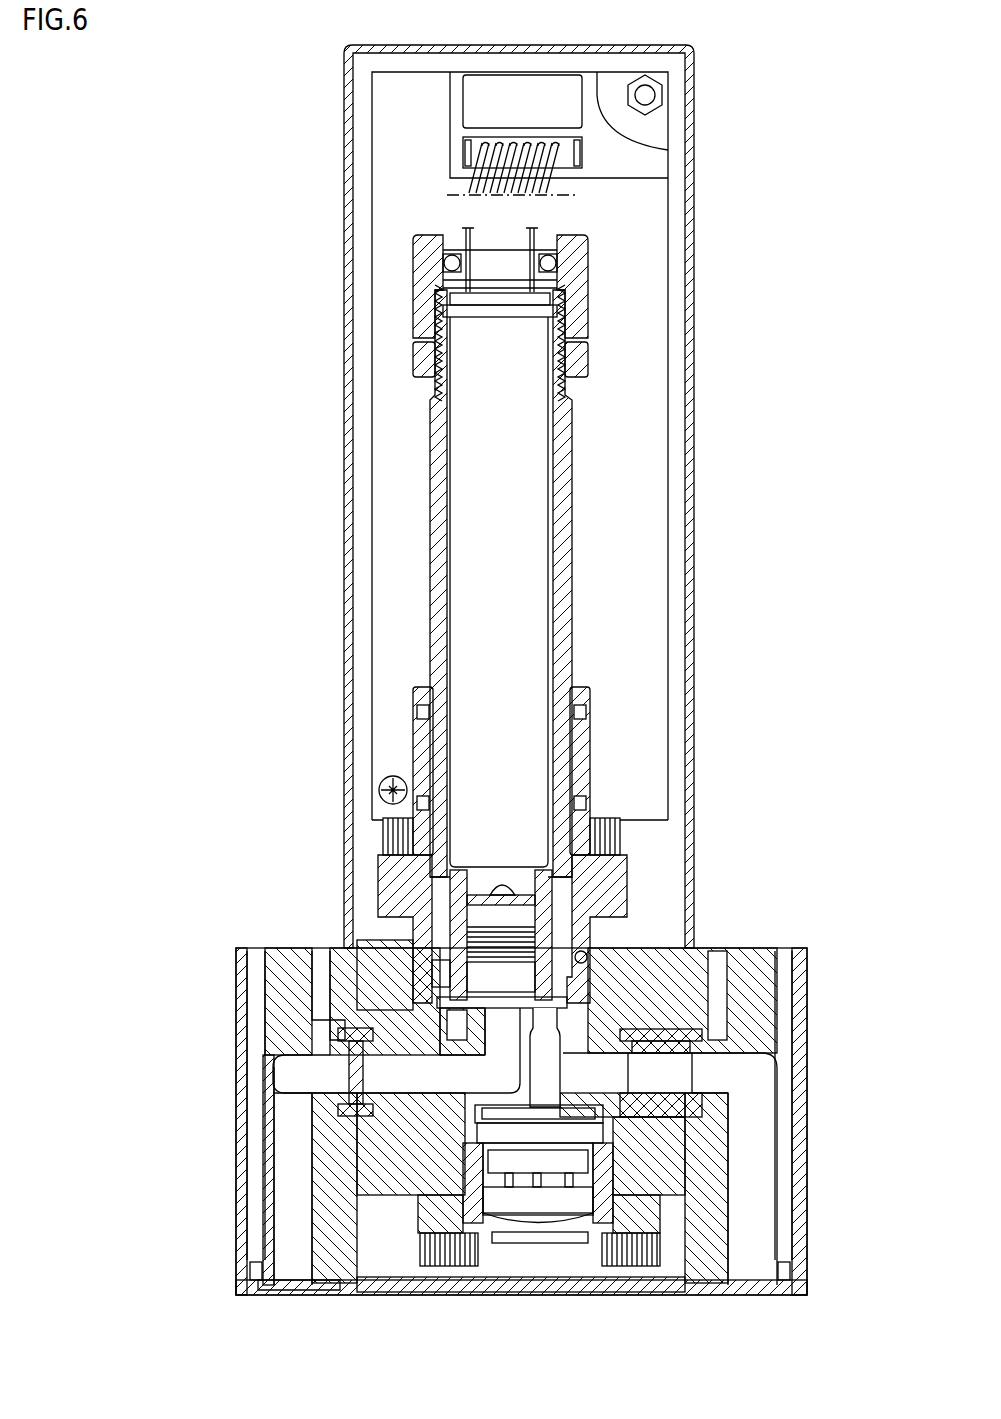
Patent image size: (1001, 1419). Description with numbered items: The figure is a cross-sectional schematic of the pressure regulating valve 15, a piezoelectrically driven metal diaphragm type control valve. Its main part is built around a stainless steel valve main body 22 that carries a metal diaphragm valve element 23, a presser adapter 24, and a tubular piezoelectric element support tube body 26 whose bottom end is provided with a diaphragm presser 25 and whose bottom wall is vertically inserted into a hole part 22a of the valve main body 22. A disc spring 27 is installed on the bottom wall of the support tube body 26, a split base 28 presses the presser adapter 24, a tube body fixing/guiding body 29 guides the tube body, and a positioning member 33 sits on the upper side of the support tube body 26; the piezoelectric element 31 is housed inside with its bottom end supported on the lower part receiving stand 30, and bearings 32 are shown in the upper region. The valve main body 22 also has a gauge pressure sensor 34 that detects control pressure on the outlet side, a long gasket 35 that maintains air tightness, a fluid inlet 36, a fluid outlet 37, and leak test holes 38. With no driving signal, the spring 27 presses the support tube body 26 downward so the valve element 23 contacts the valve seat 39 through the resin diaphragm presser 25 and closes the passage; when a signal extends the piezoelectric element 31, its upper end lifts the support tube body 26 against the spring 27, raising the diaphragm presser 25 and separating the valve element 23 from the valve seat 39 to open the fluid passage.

The pressure regulating valve 15 is at (303, 820).
The valve main body 22 is at (360, 1012).
The hole part 22a is at (583, 950).
The metal diaphragm valve element 23 is at (498, 1015).
The presser adapter 24 is at (448, 1032).
The diaphragm presser 25 is at (507, 922).
The piezoelectric element support tube body 26 is at (556, 598).
The disc spring 27 is at (470, 912).
The split base 28 is at (432, 967).
The tube body fixing/guiding body 29 is at (590, 872).
The lower part receiving stand 30 is at (520, 886).
The piezoelectric element 31 is at (510, 508).
The bearing 32 is at (560, 265).
The positioning member 33 is at (575, 305).
The gauge pressure sensor 34 is at (535, 1115).
The long gasket 35 is at (665, 1100).
The fluid inlet 36 is at (294, 1225).
The fluid outlet 37 is at (748, 1220).
The leak test holes 38 is at (325, 962).
The valve seat 39 is at (532, 1022).